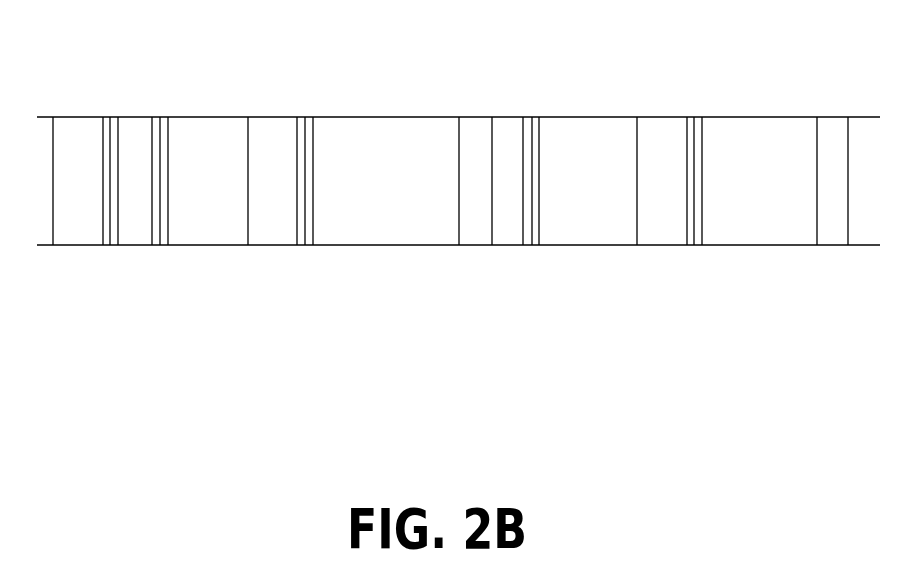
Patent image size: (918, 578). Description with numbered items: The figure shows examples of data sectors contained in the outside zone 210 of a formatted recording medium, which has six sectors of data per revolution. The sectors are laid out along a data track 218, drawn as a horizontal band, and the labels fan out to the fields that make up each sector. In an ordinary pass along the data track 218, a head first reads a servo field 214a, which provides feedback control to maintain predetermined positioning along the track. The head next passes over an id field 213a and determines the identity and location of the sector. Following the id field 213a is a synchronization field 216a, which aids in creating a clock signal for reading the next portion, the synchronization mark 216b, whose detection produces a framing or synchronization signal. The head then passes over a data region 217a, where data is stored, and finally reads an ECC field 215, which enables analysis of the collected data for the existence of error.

The outside zone 210 is at (458, 266).
The id field 213a is at (507, 179).
The servo field 214a is at (873, 177).
The ECC field 215 is at (833, 178).
The synchronization field 216a is at (692, 180).
The synchronization mark 216b is at (698, 180).
The data region 217a is at (767, 179).
The data track 218 is at (45, 116).